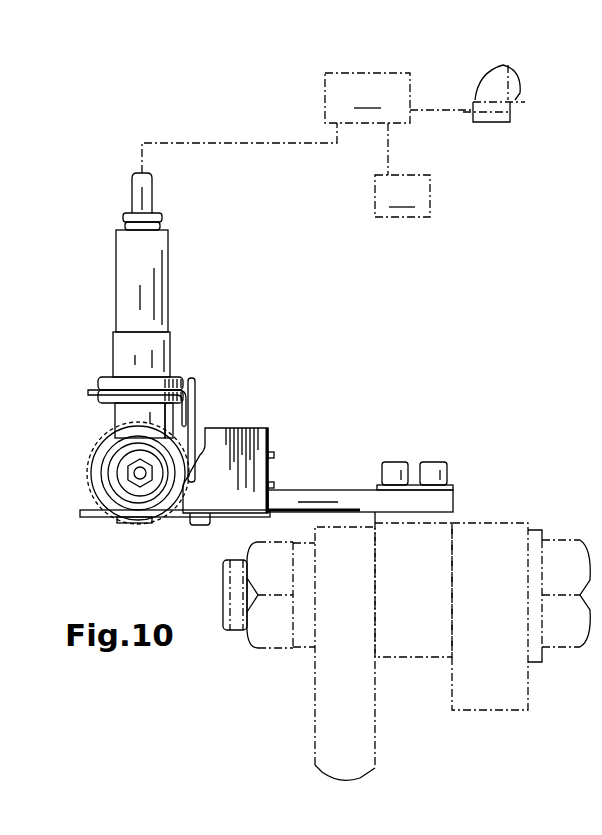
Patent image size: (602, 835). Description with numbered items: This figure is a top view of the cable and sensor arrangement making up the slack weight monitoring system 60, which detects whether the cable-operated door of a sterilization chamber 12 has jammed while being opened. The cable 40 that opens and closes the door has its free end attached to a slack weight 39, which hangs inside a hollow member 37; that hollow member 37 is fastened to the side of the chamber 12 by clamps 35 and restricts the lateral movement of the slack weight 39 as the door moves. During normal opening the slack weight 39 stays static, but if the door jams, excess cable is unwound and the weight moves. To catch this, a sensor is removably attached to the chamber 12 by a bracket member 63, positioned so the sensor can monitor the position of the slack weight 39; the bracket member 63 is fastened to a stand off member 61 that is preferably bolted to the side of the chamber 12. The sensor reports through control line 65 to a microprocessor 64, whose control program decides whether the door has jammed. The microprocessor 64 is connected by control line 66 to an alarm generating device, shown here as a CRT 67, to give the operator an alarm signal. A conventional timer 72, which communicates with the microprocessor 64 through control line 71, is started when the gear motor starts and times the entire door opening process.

The sterilization chamber 12 is at (331, 684).
The clamps 35 is at (133, 520).
The hollow member 37 is at (103, 443).
The slack weight 39 is at (123, 463).
The cable 40 is at (125, 477).
The slack weight monitoring system 60 is at (248, 378).
The stand off member 61 is at (323, 503).
The bracket member 63 is at (90, 390).
The microprocessor 64 is at (367, 98).
The control line 65 is at (293, 142).
The control line 66 is at (437, 110).
The CRT 67 is at (494, 73).
The control line 71 is at (388, 138).
The timer 72 is at (402, 196).